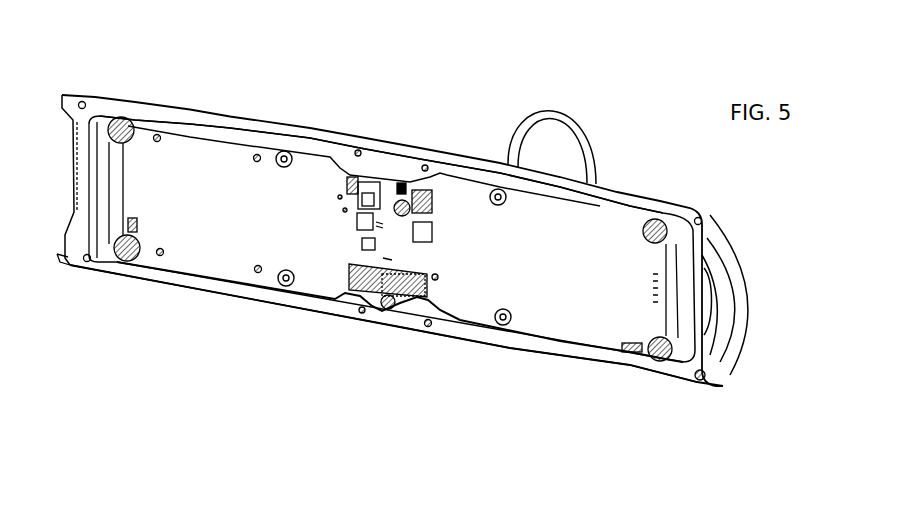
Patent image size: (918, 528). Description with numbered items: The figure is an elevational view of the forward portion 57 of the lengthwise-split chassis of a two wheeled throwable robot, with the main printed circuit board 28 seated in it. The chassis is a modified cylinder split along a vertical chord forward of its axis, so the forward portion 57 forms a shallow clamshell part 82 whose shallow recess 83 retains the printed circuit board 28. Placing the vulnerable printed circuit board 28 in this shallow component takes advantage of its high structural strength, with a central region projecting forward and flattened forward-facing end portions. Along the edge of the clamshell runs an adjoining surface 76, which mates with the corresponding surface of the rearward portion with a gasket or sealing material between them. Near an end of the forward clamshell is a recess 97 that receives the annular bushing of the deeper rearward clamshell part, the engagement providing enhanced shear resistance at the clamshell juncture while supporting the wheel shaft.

The forward portion 57 is at (218, 112).
The adjoining surface 76 is at (617, 196).
The shallow clamshell part 82 is at (510, 349).
The main printed circuit board 28 is at (555, 312).
The shallow recess 83 is at (111, 179).
The recess 97 is at (712, 303).